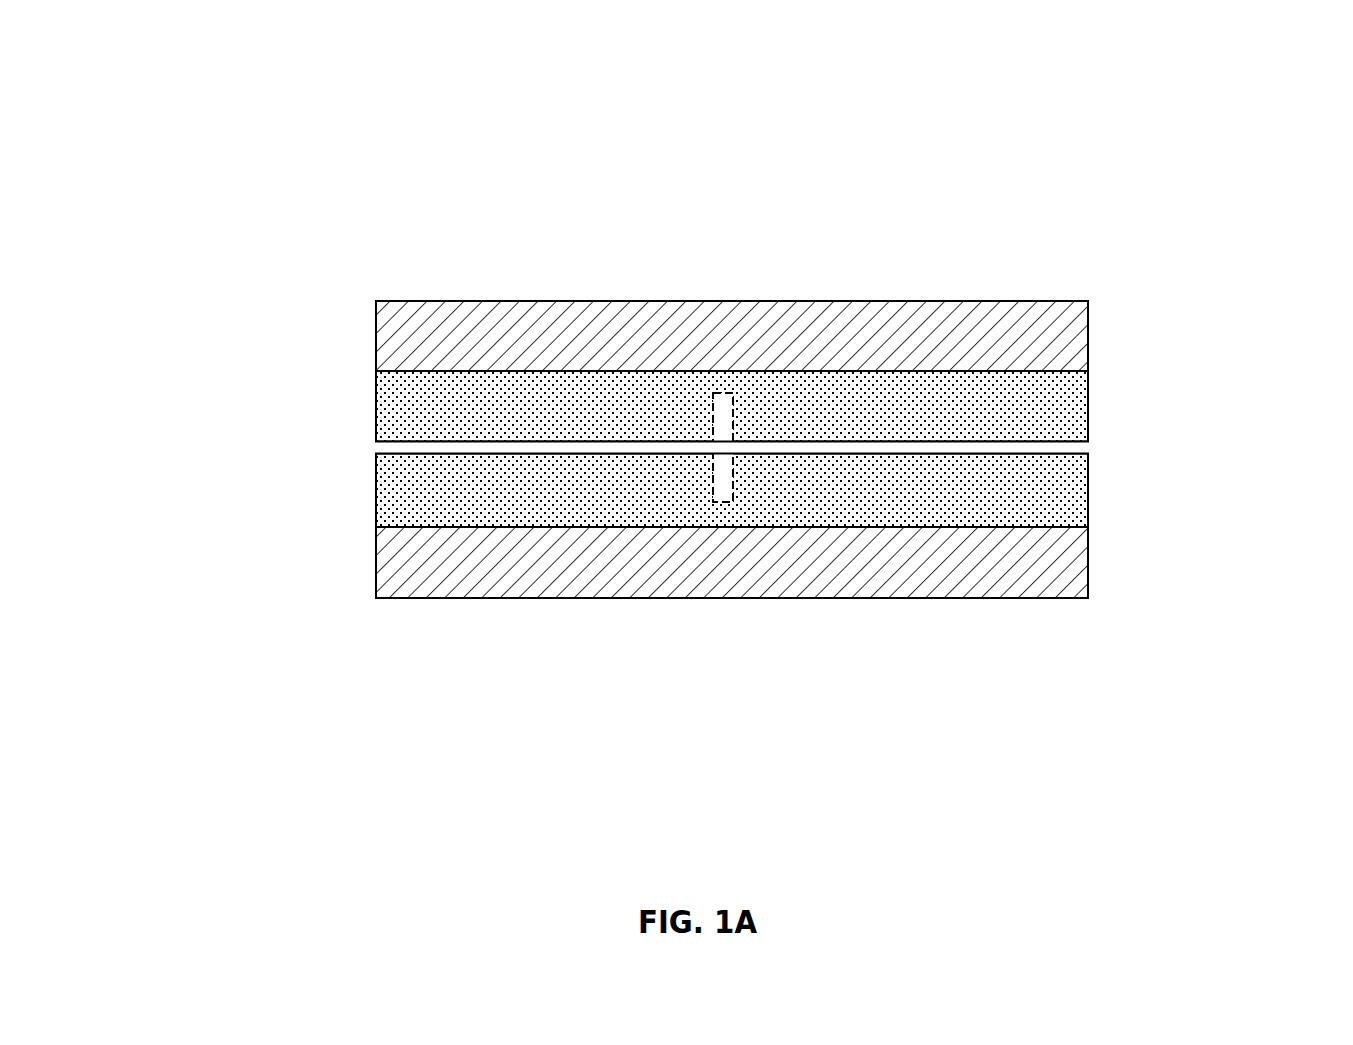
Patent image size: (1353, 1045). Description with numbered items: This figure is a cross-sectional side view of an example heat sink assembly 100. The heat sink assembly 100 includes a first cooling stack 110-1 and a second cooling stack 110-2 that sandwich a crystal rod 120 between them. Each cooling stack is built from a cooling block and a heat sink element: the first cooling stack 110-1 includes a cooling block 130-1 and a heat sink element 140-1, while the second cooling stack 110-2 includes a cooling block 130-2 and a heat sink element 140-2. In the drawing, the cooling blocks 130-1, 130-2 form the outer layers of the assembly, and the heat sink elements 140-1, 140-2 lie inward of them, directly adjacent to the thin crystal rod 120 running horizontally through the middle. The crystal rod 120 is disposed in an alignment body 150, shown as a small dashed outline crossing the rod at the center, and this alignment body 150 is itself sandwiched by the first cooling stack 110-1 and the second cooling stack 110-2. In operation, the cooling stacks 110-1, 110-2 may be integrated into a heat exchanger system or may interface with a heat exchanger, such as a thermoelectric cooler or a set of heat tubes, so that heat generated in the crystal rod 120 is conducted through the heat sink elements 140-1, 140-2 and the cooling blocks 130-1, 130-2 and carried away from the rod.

The heat sink assembly 100 is at (213, 39).
The first cooling stack 110-1 is at (1110, 438).
The second cooling stack 110-2 is at (1110, 598).
The crystal rod 120 is at (1108, 449).
The cooling block 130-1 is at (616, 336).
The cooling block 130-2 is at (618, 562).
The heat sink element 140-1 is at (594, 406).
The heat sink element 140-2 is at (594, 491).
The alignment body 150 is at (740, 390).